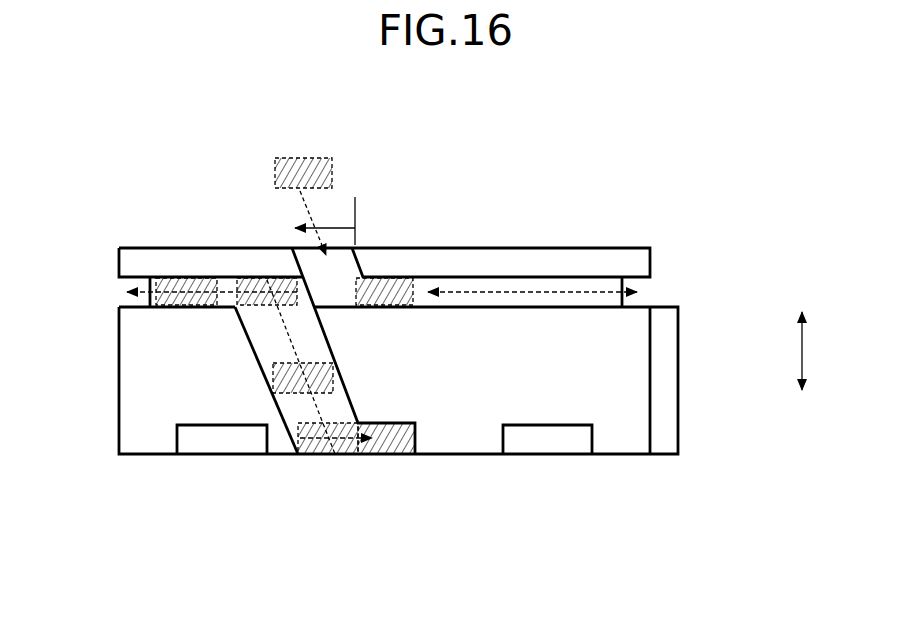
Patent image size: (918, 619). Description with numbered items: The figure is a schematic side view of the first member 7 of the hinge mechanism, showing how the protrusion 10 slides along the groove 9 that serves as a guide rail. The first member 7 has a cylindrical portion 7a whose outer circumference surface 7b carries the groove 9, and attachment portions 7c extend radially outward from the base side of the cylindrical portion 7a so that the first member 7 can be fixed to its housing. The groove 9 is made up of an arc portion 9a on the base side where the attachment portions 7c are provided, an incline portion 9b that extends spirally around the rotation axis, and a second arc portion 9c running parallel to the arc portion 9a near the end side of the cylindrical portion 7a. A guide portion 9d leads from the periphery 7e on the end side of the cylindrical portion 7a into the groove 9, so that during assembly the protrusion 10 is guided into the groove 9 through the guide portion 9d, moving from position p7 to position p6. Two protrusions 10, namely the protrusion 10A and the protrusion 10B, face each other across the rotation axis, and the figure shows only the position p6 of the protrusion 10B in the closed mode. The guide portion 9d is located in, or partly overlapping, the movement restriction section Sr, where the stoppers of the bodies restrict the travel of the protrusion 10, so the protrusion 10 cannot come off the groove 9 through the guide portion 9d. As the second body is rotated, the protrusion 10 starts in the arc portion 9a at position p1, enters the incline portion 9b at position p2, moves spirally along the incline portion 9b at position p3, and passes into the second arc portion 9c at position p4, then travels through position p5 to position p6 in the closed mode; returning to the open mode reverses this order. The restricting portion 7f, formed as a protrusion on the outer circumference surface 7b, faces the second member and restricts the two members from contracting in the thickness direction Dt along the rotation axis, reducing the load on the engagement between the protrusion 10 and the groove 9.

The first member 7 is at (394, 346).
The cylindrical portion 7a is at (394, 346).
The outer circumference surface 7b is at (138, 360).
The attachment portion 7c is at (203, 446).
The periphery 7e is at (583, 247).
The restricting portion 7f is at (667, 410).
The groove 9 is at (395, 359).
The arc portion 9a is at (408, 444).
The incline portion 9b is at (263, 332).
The second arc portion 9c is at (152, 299).
The guide portion 9d is at (346, 268).
The protrusion 10 is at (315, 342).
The protrusion 10A is at (310, 342).
The protrusion 10B is at (398, 210).
The position p1 is at (383, 457).
The position p2 is at (315, 457).
The position p3 is at (335, 386).
The position p4 is at (267, 282).
The position p5 is at (176, 300).
The position p6 is at (398, 277).
The position p7 is at (360, 185).
The movement restriction section Sr is at (325, 221).
The thickness direction Dt is at (819, 351).